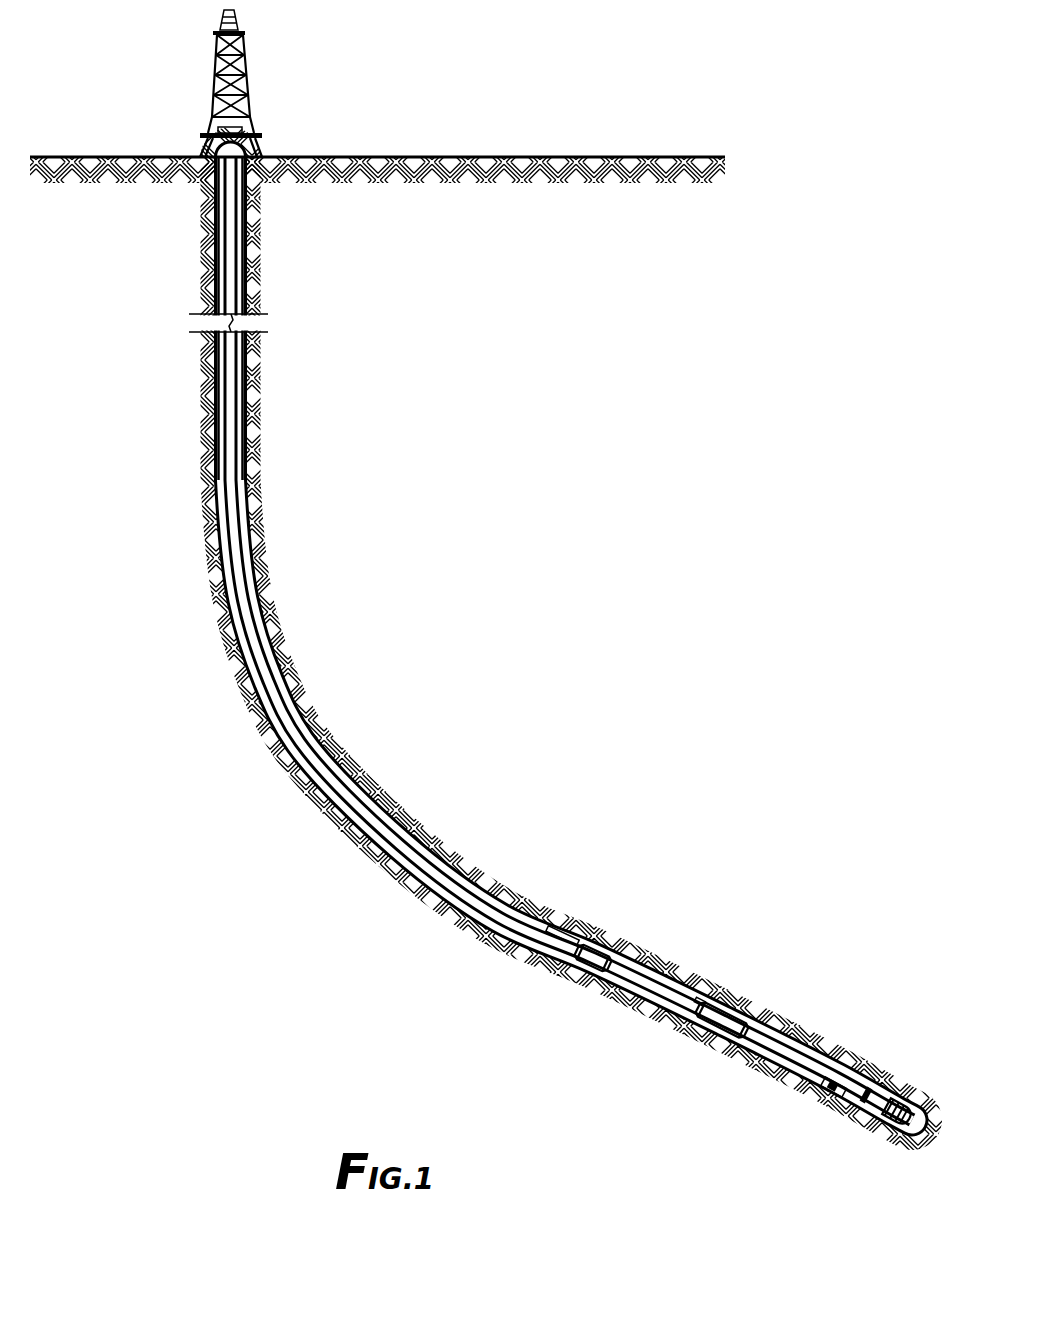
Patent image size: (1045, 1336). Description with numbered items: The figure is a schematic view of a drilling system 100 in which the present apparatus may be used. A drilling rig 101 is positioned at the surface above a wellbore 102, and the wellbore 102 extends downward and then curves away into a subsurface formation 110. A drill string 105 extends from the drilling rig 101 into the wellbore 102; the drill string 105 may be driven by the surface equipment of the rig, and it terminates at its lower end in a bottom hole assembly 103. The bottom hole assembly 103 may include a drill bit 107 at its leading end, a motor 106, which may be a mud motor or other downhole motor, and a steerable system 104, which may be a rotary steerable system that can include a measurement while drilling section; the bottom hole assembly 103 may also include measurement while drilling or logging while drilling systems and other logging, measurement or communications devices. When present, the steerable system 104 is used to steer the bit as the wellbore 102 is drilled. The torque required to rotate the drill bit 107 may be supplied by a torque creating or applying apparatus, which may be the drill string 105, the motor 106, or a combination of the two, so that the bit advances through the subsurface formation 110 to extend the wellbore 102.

The drilling system 100 is at (763, 497).
The drilling rig 101 is at (245, 58).
The wellbore 102 is at (215, 277).
The bottom hole assembly 103 is at (672, 1048).
The steerable system 104 is at (835, 1070).
The drill string 105 is at (278, 683).
The motor 106 is at (680, 981).
The drill bit 107 is at (878, 1126).
The subsurface formation 110 is at (436, 925).